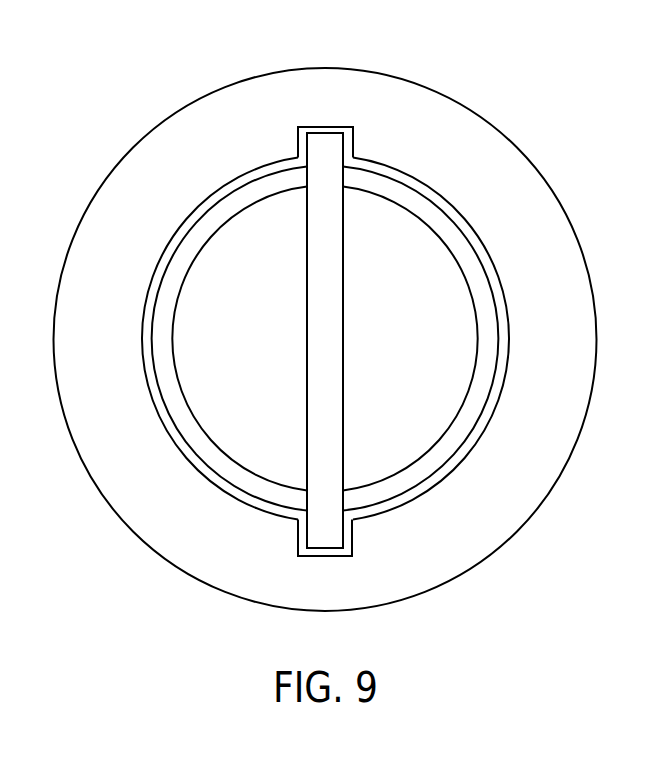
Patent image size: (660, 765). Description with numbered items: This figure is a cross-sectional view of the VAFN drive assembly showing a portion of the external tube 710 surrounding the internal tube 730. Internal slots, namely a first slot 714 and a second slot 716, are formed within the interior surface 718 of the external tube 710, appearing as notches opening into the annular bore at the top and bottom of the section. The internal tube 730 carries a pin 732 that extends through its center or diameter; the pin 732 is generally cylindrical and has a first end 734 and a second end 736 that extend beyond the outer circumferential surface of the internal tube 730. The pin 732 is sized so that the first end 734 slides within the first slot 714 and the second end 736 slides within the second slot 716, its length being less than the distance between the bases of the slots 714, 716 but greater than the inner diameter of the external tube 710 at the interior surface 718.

The external tube 710 is at (213, 104).
The first slot 714 is at (340, 127).
The second slot 716 is at (324, 554).
The interior surface 718 is at (182, 222).
The internal tube 730 is at (215, 220).
The pin 732 is at (337, 340).
The first end 734 is at (333, 147).
The second end 736 is at (320, 533).